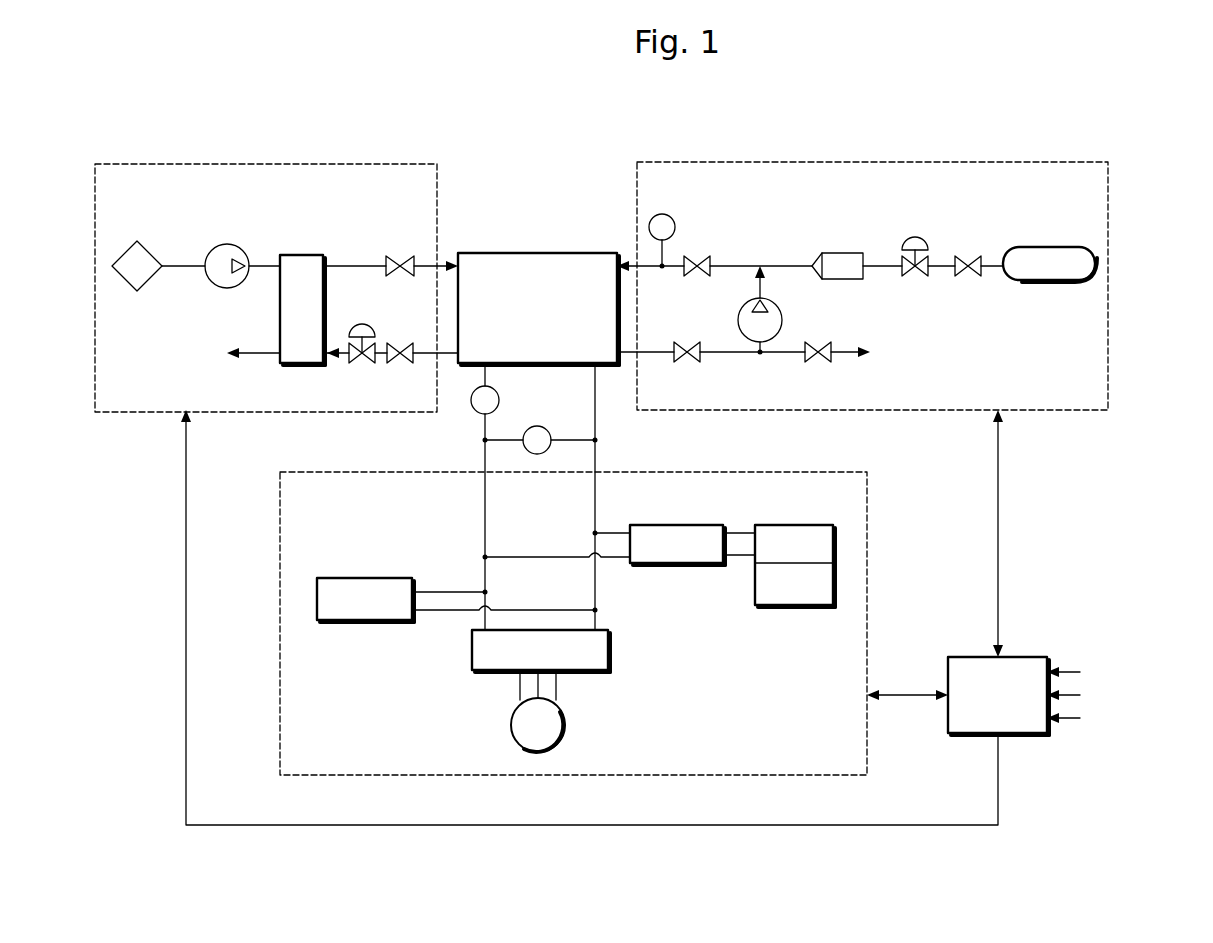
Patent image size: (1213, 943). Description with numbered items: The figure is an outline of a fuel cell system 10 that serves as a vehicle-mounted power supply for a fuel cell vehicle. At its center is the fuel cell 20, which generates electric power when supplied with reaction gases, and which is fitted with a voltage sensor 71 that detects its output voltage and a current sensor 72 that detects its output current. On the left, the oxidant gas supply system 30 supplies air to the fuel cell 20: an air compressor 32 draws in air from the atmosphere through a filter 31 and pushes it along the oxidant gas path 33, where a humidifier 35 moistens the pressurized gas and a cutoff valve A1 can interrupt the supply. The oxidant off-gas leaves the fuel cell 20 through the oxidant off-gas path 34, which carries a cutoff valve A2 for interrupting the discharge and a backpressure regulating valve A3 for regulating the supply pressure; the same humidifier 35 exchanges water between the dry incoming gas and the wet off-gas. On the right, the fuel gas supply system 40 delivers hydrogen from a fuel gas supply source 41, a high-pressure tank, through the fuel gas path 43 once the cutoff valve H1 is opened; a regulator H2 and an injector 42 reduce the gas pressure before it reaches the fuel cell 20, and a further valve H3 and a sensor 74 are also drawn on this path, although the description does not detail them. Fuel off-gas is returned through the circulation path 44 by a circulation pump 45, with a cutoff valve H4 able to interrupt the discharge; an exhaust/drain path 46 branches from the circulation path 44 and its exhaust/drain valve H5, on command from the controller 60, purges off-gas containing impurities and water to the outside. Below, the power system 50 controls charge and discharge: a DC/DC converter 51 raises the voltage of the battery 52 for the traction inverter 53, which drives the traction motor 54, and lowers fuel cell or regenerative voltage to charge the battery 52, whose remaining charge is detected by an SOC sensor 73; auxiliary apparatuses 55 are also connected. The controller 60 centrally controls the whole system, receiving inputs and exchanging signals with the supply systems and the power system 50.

The fuel cell system 10 is at (1092, 131).
The fuel cell 20 is at (537, 253).
The oxidant gas supply system 30 is at (232, 162).
The filter 31 is at (151, 254).
The air compressor 32 is at (227, 244).
The oxidant gas path 33 is at (340, 266).
The oxidant off-gas path 34 is at (402, 346).
The humidifier 35 is at (301, 255).
The fuel gas supply system 40 is at (950, 160).
The fuel gas supply source 41 is at (1048, 247).
The injector 42 is at (838, 253).
The fuel gas path 43 is at (735, 266).
The circulation path 44 is at (725, 358).
The circulation pump 45 is at (782, 318).
The exhaust/drain path 46 is at (845, 352).
The power system 50 is at (872, 535).
The DC/DC converter 51 is at (680, 525).
The battery 52 is at (785, 525).
The traction inverter 53 is at (610, 648).
The traction motor 54 is at (565, 719).
The auxiliary apparatuses 55 is at (375, 578).
The controller 60 is at (1020, 657).
The voltage sensor 71 is at (542, 427).
The current sensor 72 is at (474, 409).
The SOC sensor 73 is at (780, 606).
The pressure sensor 74 is at (662, 213).
The cutoff valve A1 is at (392, 257).
The cutoff valve A2 is at (396, 362).
The backpressure regulating valve A3 is at (363, 327).
The cutoff valve H1 is at (970, 257).
The regulator H2 is at (918, 240).
The hydrogen supply valve H3 is at (700, 257).
The cutoff valve H4 is at (681, 362).
The exhaust/drain valve H5 is at (812, 362).